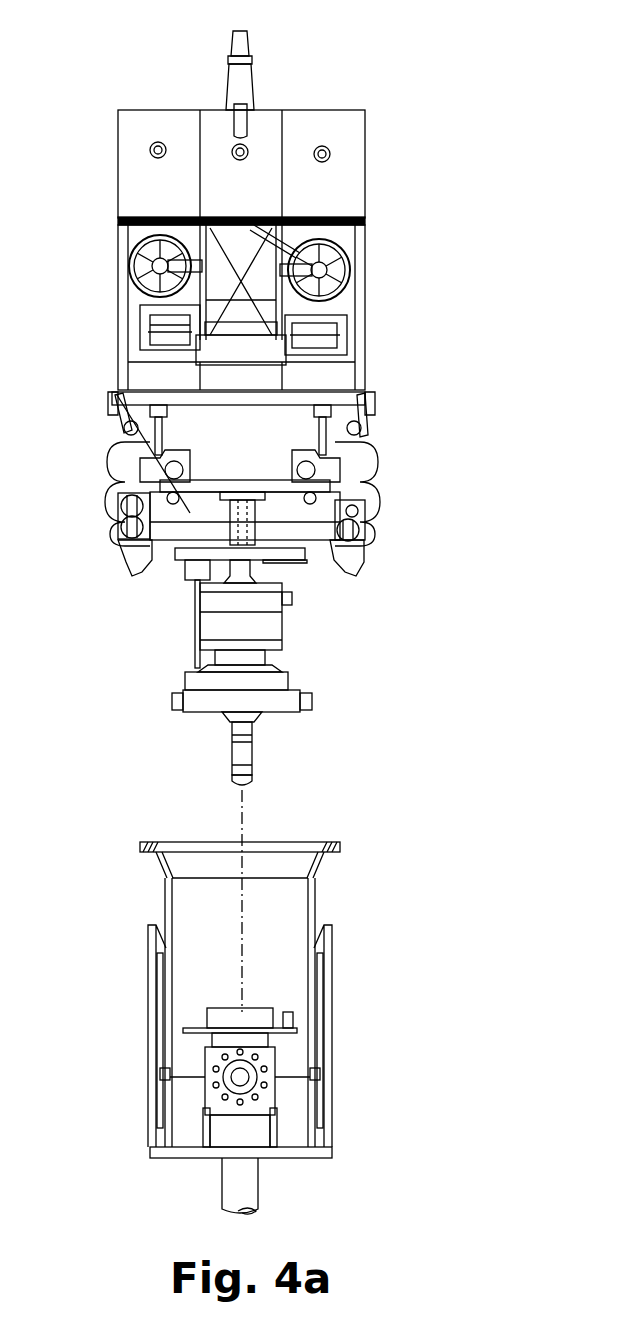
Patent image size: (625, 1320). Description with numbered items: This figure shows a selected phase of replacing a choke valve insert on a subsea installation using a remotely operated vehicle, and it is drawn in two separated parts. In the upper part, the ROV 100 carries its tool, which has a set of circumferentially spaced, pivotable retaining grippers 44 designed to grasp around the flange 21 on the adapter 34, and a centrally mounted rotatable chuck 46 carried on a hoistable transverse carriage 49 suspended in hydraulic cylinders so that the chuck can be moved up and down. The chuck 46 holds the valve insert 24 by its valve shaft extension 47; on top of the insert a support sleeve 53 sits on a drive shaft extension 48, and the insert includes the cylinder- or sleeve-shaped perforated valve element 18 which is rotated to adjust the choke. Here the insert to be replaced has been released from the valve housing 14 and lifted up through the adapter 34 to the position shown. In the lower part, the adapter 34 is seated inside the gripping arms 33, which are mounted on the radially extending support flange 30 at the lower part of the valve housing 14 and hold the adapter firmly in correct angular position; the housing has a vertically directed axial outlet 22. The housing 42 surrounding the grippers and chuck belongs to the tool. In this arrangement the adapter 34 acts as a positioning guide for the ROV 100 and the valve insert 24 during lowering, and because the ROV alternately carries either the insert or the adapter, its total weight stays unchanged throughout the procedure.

The ROV 100 is at (368, 260).
The transverse carriage 49 is at (127, 435).
The valve shaft extension 47 is at (312, 480).
The gripper housing 42 is at (384, 479).
The rotatable chuck 46 is at (260, 508).
The retaining grippers 44 is at (128, 556).
The support sleeve 53 is at (237, 565).
The drive shaft extension 48 is at (290, 565).
The valve insert 24 is at (218, 628).
The perforated valve element 18 is at (235, 757).
The flange 21 is at (337, 848).
The adapter 34 is at (167, 903).
The gripping arms 33 is at (148, 975).
The valve housing 14 is at (272, 1065).
The support flange 30 is at (318, 1153).
The axial outlet 22 is at (257, 1198).